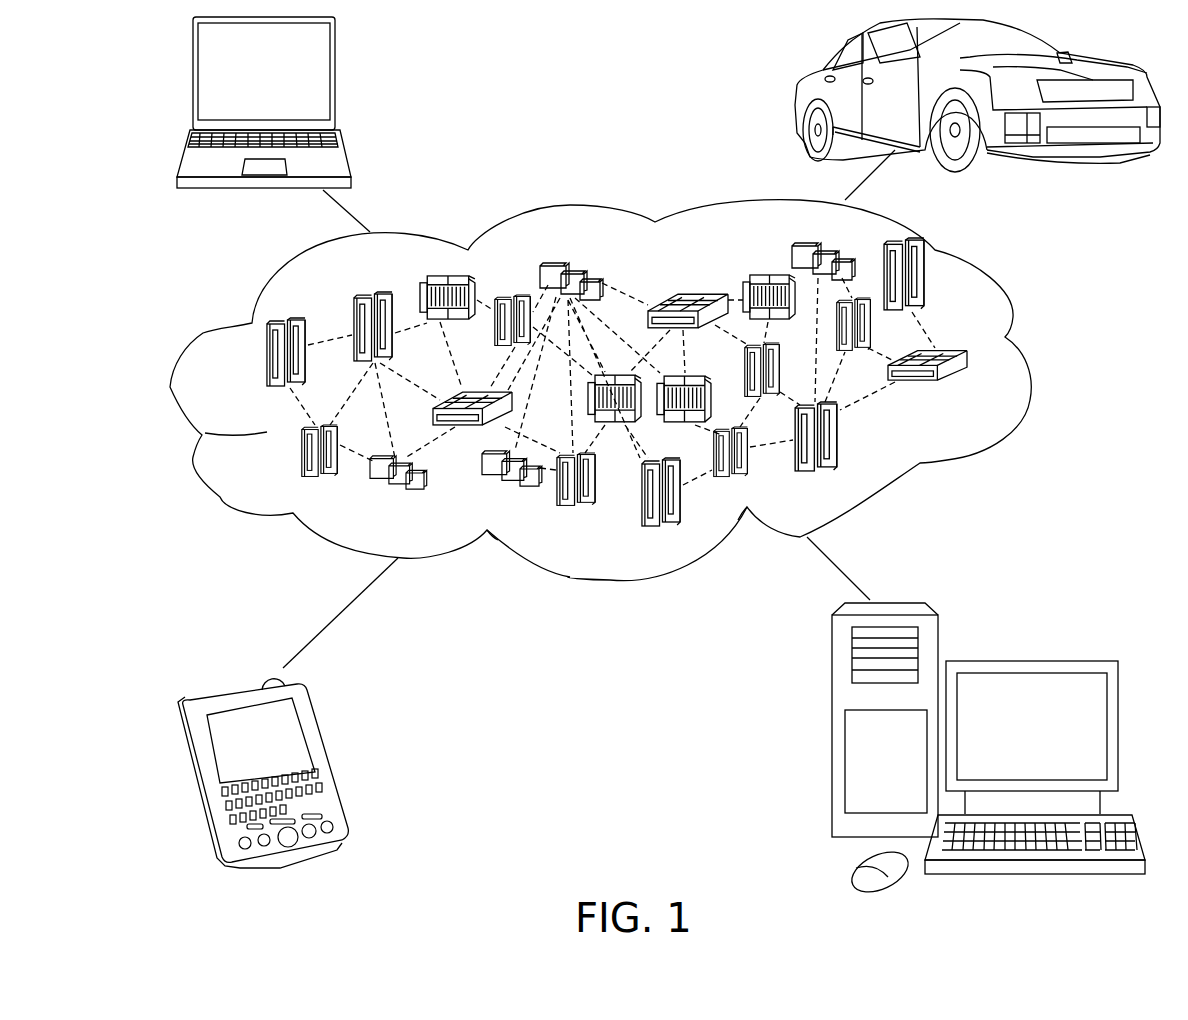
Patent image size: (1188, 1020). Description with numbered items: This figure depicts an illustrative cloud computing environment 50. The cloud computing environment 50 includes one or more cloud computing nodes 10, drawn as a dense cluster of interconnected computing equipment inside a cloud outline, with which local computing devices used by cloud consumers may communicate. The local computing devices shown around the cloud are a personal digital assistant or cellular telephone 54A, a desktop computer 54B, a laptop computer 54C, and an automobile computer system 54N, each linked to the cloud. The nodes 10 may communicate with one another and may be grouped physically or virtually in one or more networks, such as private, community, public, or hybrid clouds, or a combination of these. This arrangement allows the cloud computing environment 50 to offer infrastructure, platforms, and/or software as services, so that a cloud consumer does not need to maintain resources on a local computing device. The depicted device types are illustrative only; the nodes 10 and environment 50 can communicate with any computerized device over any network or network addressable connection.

The cloud computing node 10 is at (968, 392).
The cloud computing environment 50 is at (1030, 362).
The personal digital assistant or cellular telephone 54A is at (333, 755).
The desktop computer 54B is at (1028, 660).
The laptop computer 54C is at (336, 82).
The automobile computer system 54N is at (797, 97).